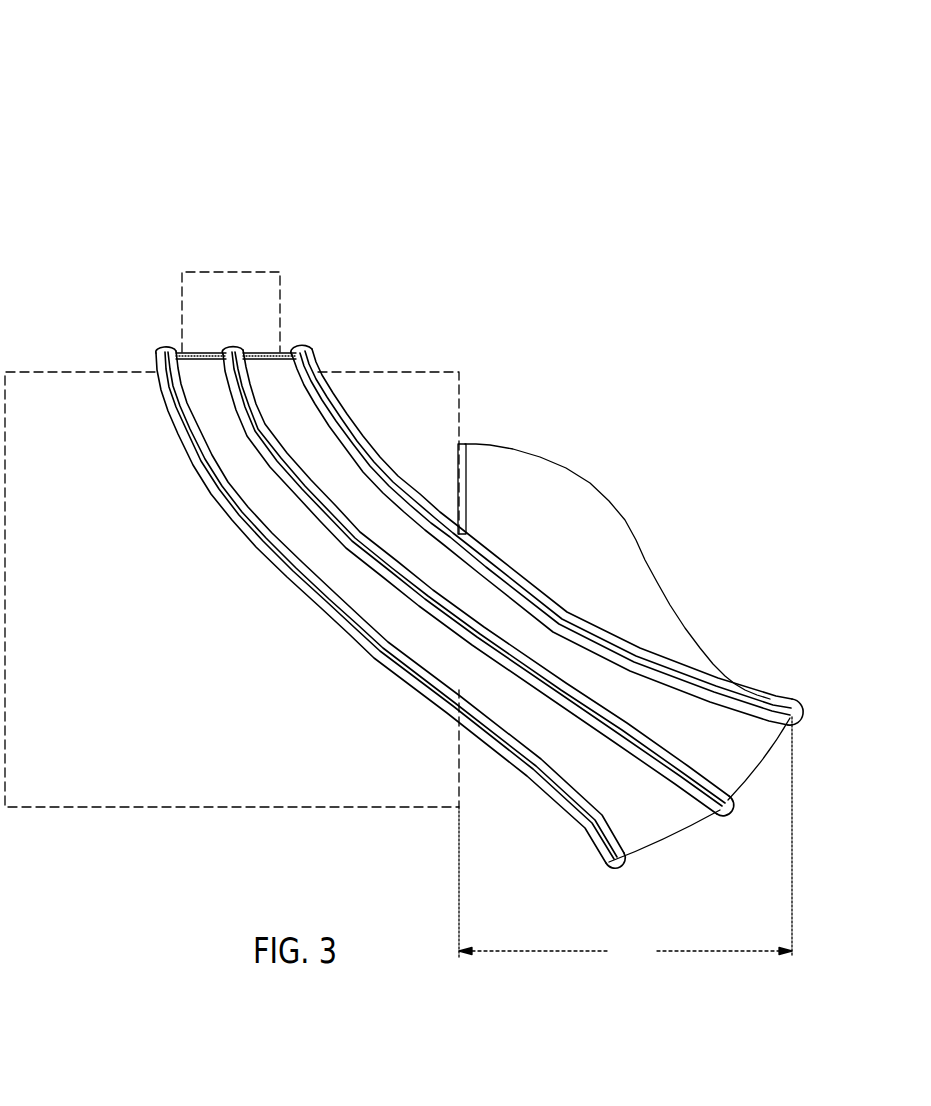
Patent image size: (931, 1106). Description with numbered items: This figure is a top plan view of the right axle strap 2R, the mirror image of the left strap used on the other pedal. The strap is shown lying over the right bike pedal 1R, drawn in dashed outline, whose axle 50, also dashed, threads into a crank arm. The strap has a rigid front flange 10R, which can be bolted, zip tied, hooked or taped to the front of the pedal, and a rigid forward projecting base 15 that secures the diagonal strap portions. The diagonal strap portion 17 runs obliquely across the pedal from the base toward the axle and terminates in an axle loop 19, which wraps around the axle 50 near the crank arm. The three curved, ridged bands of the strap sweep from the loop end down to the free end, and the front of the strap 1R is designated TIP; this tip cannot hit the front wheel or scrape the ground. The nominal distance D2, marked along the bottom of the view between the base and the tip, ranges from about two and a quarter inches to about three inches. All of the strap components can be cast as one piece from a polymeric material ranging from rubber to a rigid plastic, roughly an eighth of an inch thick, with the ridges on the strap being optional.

The axle 50 is at (228, 318).
The axle loop 19 is at (292, 334).
The front flange 10R is at (465, 443).
The forward projecting base 15 is at (602, 588).
The right bike pedal 1R is at (176, 694).
The right axle strap 2R is at (407, 620).
The diagonal strap portion 17 is at (612, 802).
The tip TIP is at (740, 782).
The dimension D2 is at (625, 841).